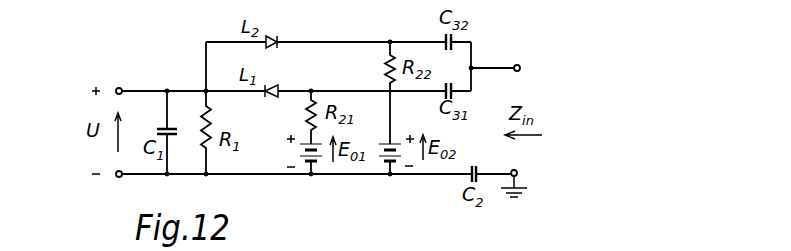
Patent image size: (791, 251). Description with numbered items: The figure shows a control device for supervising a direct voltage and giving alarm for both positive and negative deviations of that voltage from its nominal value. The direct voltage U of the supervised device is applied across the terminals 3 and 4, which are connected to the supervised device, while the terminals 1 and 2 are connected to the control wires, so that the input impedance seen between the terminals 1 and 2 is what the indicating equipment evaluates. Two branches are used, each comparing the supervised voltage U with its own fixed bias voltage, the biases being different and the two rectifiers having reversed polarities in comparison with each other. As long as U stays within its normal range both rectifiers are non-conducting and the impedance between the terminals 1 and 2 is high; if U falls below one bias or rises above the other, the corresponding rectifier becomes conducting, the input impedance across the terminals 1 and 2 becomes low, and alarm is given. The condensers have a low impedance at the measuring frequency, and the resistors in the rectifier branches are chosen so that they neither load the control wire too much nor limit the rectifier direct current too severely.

The terminal 1 is at (526, 68).
The terminal 2 is at (519, 179).
The terminal 3 is at (117, 79).
The terminal 4 is at (117, 186).